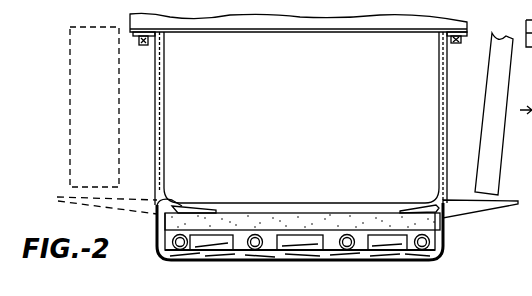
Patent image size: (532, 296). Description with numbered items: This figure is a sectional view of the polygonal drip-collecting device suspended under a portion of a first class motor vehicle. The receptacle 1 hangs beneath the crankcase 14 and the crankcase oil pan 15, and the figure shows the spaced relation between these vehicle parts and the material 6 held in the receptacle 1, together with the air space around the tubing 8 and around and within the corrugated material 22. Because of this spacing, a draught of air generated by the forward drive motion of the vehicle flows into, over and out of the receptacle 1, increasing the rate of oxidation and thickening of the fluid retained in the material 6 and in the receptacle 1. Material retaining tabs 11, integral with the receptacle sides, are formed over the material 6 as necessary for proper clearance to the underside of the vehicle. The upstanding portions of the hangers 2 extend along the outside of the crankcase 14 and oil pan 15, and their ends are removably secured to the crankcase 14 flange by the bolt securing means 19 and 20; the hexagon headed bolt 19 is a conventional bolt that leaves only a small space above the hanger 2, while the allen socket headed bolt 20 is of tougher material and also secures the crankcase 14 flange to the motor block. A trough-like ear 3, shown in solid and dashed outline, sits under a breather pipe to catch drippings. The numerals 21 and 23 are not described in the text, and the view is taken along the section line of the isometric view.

The receptacle 1 is at (444, 233).
The hanger 2 is at (155, 108).
The ear 3 is at (65, 195).
The material 6 is at (313, 222).
The tubing 8 is at (253, 248).
The material retaining tab 11 is at (190, 212).
The crankcase 14 is at (247, 42).
The crankcase oil pan 15 is at (287, 183).
The hexagon headed bolt 19 is at (458, 44).
The allen socket headed bolt 20 is at (143, 46).
The phantom panel 21 is at (85, 117).
The corrugated material 22 is at (300, 250).
The roller 23 is at (400, 260).